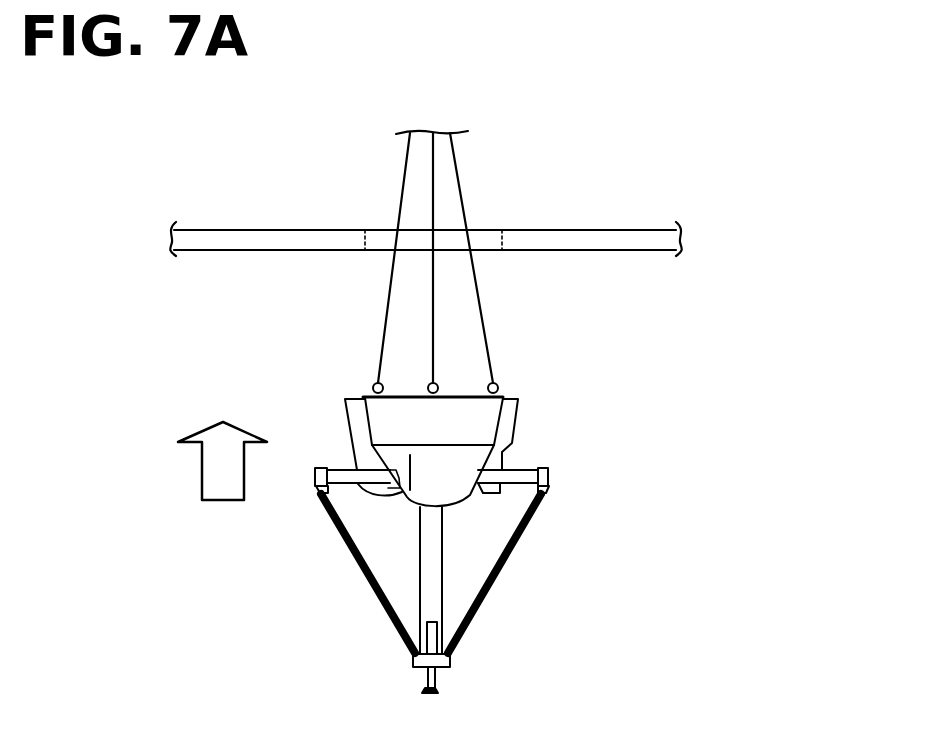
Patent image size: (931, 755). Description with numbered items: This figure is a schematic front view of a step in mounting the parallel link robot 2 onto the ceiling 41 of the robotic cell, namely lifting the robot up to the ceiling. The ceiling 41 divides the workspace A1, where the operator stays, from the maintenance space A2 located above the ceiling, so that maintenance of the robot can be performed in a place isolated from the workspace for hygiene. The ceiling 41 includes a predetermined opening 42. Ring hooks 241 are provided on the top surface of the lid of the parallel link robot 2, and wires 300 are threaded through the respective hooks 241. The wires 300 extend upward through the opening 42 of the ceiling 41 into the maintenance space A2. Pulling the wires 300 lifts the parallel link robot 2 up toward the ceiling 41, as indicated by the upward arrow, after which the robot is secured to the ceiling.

The ceiling 41 is at (209, 230).
The opening 42 is at (371, 221).
The wire 300 is at (478, 299).
The ring hook 241 is at (373, 385).
The parallel link robot 2 is at (542, 454).
The workspace A1 is at (688, 319).
The maintenance space A2 is at (688, 147).